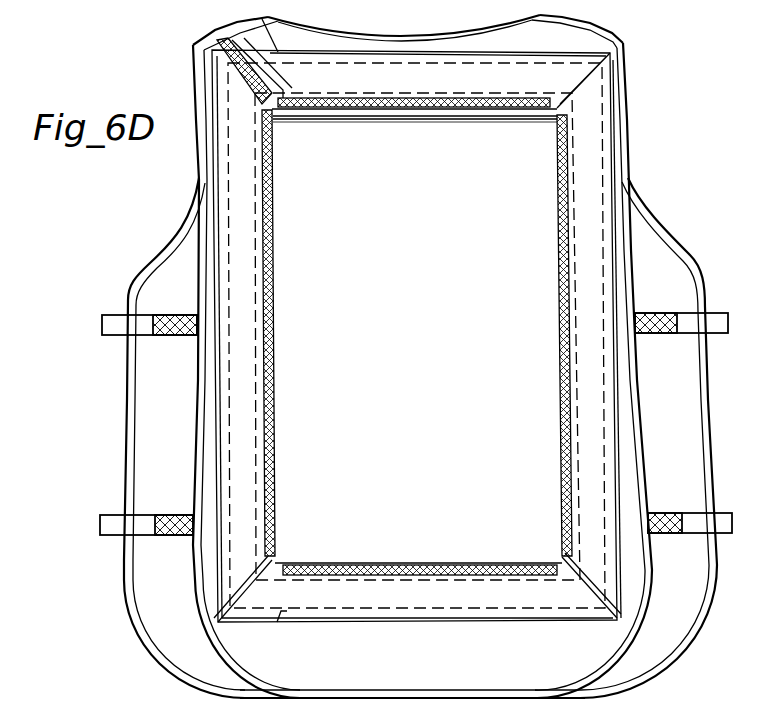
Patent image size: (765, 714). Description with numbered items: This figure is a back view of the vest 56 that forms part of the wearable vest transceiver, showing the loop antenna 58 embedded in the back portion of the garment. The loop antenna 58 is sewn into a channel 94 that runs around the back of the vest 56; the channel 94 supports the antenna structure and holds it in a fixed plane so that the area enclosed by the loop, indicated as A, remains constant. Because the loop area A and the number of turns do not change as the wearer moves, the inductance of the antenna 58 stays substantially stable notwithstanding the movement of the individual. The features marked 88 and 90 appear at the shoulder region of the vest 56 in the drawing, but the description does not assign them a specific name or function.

The vest 56 is at (421, 12).
The loop antenna 58 is at (246, 529).
The shoulder portion 88 is at (593, 33).
The shoulder flap 90 is at (225, 30).
The channel 94 is at (287, 612).
The loop area A is at (298, 168).